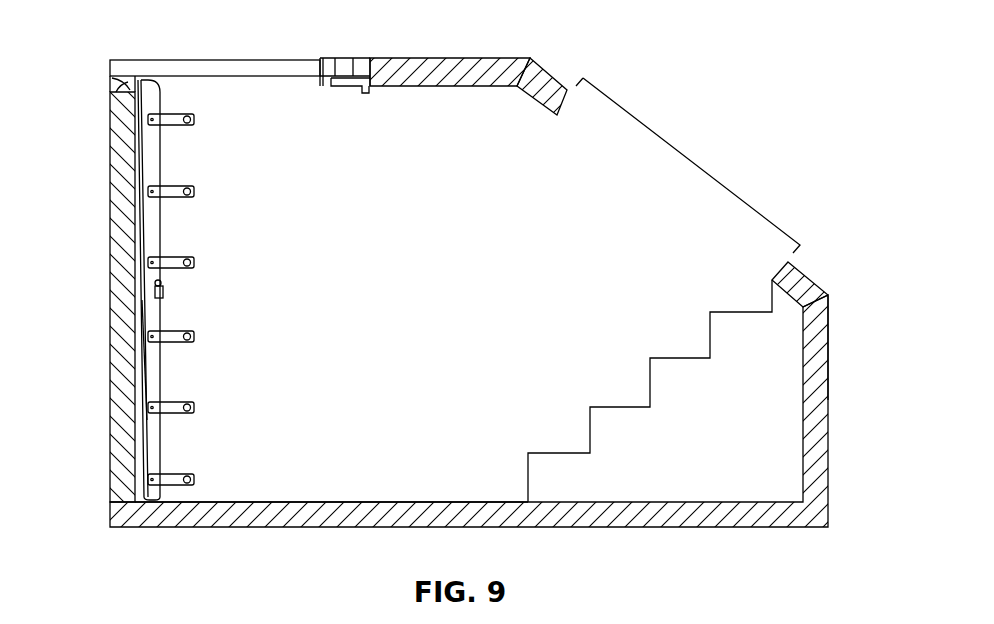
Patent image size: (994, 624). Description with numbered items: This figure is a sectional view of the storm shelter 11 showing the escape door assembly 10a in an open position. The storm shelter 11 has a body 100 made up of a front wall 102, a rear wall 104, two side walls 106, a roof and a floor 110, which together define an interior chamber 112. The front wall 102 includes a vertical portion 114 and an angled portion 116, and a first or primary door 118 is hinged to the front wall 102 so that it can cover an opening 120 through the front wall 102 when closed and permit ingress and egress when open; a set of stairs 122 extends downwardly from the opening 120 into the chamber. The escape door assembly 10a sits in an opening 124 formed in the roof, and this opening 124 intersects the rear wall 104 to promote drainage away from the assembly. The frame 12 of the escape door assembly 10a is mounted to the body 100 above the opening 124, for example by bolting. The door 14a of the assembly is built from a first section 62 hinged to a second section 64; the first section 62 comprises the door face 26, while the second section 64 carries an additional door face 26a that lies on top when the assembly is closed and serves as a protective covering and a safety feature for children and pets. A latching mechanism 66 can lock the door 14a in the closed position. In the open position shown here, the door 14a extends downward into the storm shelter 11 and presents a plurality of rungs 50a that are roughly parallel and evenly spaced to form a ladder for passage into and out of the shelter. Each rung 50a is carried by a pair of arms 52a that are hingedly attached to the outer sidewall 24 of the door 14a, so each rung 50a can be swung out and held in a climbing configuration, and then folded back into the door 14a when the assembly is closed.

The escape door assembly 10a is at (226, 30).
The storm shelter 11 is at (628, 54).
The frame 12 is at (303, 57).
The opening 124 is at (112, 87).
The door face 26 is at (140, 165).
The door face 26a is at (147, 378).
The outer sidewall 24 is at (162, 160).
The latching mechanism 66 is at (343, 88).
The opening 120 is at (570, 104).
The first door 118 is at (694, 160).
The first section 62 is at (162, 223).
The arms 52a is at (178, 260).
The door 14a is at (167, 292).
The rungs 50a is at (197, 335).
The angled portion 116 is at (807, 274).
The second section 64 is at (162, 378).
The vertical portion 114 is at (829, 316).
The front wall 102 is at (829, 370).
The body 100 is at (829, 414).
The rear wall 104 is at (111, 455).
The interior chamber 112 is at (346, 497).
The floor 110 is at (362, 497).
The set of stairs 122 is at (620, 403).
The side walls 106 is at (232, 477).